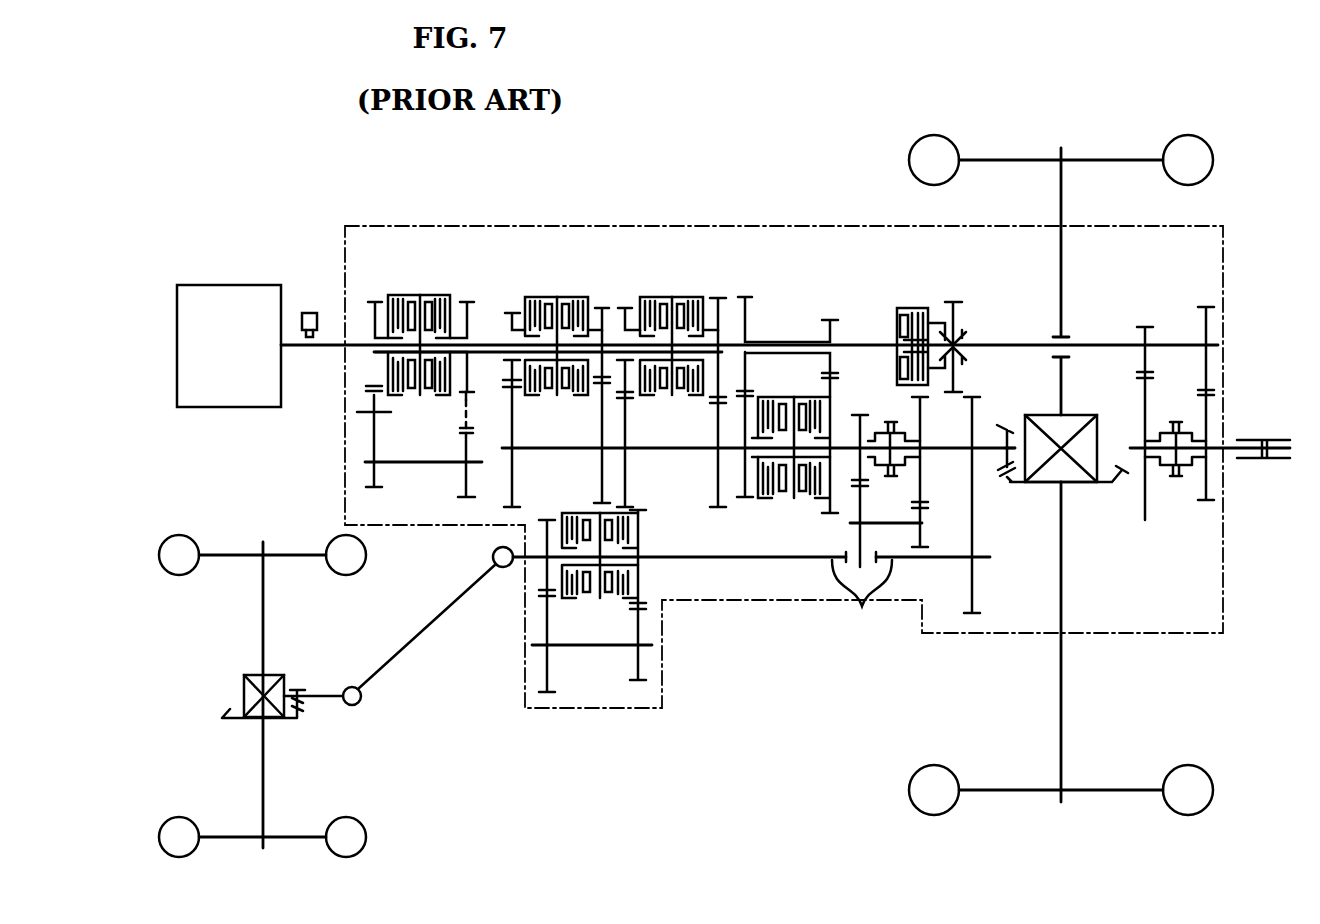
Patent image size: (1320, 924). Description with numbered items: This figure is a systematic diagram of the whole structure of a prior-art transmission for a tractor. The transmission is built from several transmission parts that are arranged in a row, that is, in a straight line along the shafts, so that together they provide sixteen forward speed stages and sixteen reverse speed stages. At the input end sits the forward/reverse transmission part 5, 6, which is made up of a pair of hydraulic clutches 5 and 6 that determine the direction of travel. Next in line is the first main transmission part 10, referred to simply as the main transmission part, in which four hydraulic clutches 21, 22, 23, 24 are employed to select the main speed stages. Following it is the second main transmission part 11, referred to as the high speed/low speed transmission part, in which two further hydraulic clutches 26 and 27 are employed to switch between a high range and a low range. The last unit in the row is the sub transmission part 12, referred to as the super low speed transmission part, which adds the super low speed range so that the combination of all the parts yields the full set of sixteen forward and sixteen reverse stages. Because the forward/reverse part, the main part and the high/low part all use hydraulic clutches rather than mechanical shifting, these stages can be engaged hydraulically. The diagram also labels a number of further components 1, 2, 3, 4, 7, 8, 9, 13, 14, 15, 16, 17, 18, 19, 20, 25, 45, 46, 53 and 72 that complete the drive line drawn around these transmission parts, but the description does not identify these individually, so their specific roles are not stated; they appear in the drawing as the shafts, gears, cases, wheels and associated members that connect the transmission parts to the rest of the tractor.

The engine 1 is at (230, 285).
The main propulsion shaft 2 is at (858, 344).
The forward/reverse switching gear unit 3 is at (922, 307).
The PTO output shaft 4 is at (1268, 459).
The hydraulic clutch 5 is at (428, 296).
The hydraulic clutch 6 is at (401, 296).
The hollow sleeve shaft 7 is at (487, 354).
The transmission case 8 is at (766, 602).
The PTO gear train 9 is at (1176, 325).
The first main transmission part 10 is at (616, 288).
The second main transmission part 11 is at (792, 295).
The sub transmission part 12 is at (930, 480).
The rear differential 13 is at (1080, 416).
The rear wheels 14 is at (909, 160).
The coupling 15 is at (751, 586).
The front wheel drive transfer unit 16 is at (590, 666).
The front propeller shaft 17 is at (418, 644).
The front differential 18 is at (244, 692).
The front wheels 19 is at (178, 534).
The counter shaft 20 is at (420, 464).
The hydraulic clutch 21 is at (546, 296).
The hydraulic clutch 22 is at (567, 296).
The hydraulic clutch 23 is at (655, 296).
The hydraulic clutch 24 is at (684, 296).
The intermediate shaft 25 is at (682, 450).
The hydraulic clutch 26 is at (798, 503).
The hydraulic clutch 27 is at (774, 503).
The front wheel drive clutch 45 is at (580, 512).
The front wheel drive clutch 46 is at (606, 602).
The synchromesh gear 53 is at (891, 420).
The rotation sensor 72 is at (310, 313).